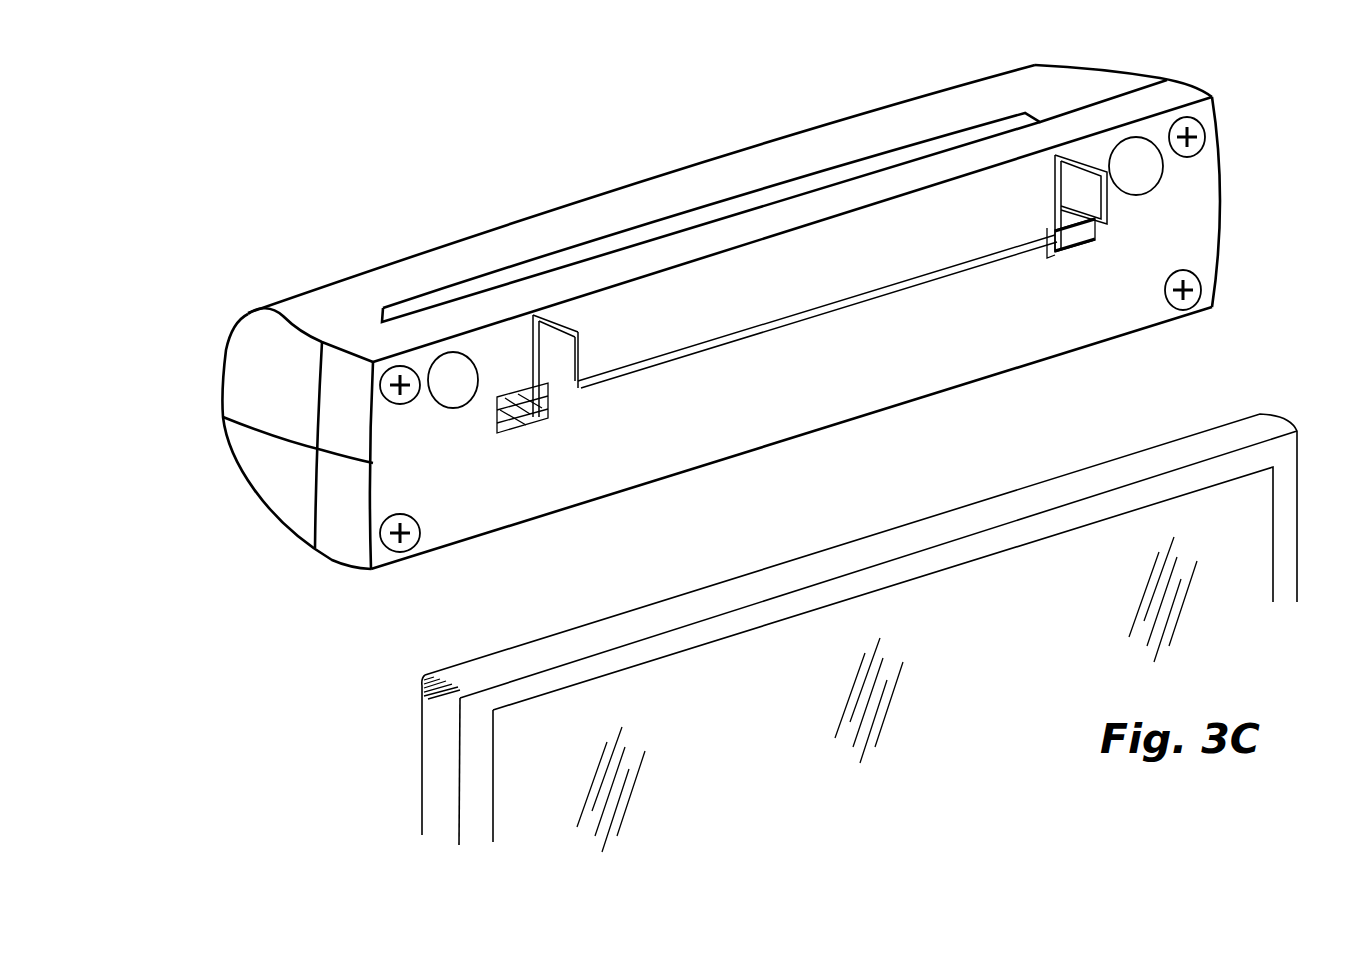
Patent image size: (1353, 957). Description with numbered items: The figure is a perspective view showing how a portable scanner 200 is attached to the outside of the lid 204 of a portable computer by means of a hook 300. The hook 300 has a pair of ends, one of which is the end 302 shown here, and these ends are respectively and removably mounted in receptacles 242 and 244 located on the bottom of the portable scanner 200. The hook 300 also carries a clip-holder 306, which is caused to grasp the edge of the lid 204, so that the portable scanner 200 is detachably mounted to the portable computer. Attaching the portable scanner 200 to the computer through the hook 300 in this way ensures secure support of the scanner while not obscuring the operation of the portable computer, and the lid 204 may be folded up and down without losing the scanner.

The portable scanner 200 is at (1012, 52).
The lid 204 is at (1270, 414).
The receptacle 242 is at (510, 415).
The receptacle 244 is at (1082, 247).
The hook 300 is at (915, 294).
The end 302 is at (820, 302).
The clip-holder 306 is at (572, 313).